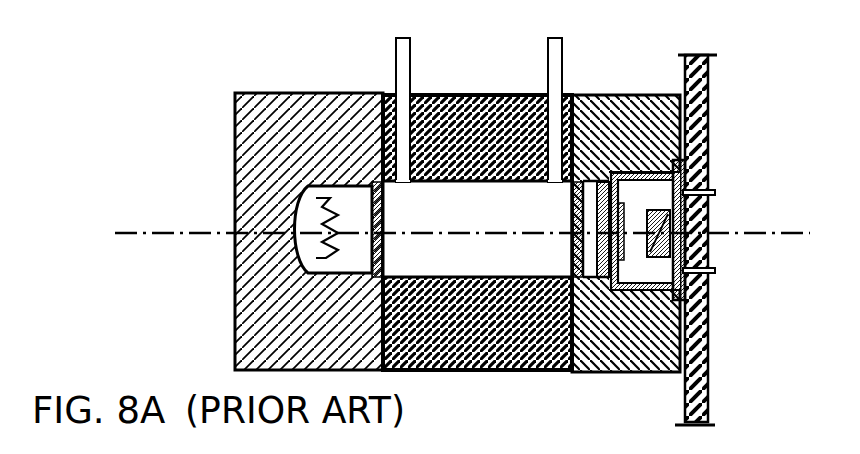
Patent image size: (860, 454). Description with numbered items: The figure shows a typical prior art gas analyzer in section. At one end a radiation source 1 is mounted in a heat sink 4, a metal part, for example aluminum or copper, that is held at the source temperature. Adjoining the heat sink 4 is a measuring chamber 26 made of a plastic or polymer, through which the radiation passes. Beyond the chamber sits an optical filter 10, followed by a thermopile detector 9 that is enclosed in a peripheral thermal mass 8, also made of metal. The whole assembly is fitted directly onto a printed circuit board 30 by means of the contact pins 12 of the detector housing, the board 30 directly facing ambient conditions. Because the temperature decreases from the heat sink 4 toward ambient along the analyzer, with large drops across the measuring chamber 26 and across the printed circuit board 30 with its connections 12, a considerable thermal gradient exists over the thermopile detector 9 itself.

The radiation source 1 is at (312, 213).
The heat sink 4 is at (235, 185).
The measuring chamber 26 is at (465, 140).
The optical filter 10 is at (587, 118).
The peripheral thermal mass 8 is at (634, 122).
The thermopile detector 9 is at (658, 208).
The contact pins 12 is at (713, 268).
The printed circuit board 30 is at (708, 377).